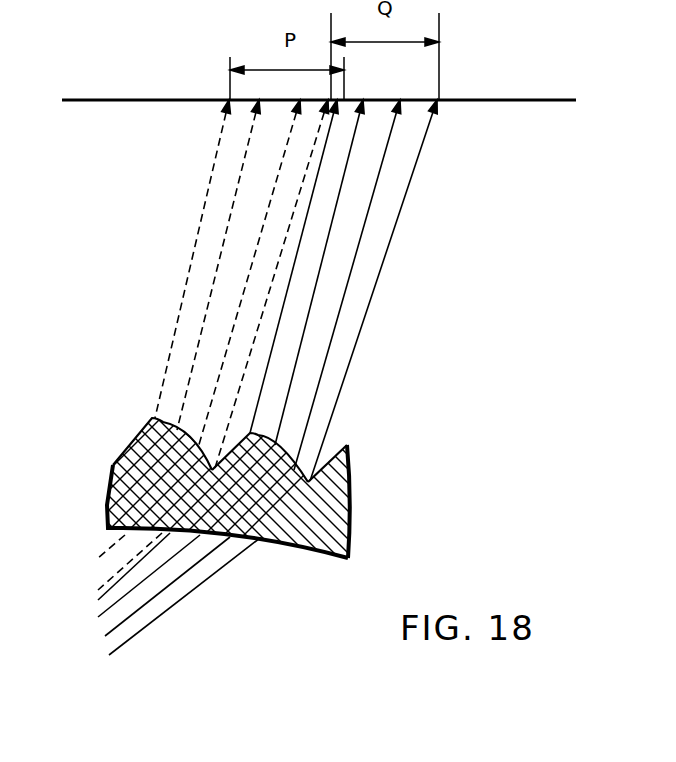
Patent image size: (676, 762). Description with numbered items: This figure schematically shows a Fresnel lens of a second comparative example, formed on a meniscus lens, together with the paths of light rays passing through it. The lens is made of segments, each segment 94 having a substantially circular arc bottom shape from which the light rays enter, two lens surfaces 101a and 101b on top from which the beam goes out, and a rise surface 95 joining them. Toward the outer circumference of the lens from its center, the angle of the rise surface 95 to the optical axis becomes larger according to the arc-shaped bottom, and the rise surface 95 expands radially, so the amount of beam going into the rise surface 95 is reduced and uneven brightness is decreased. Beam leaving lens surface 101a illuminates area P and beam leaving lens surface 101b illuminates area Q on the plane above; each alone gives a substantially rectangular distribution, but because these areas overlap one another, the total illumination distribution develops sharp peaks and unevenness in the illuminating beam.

The lens surface 101a is at (186, 440).
The lens surface 101b is at (274, 447).
The rise surface 95 is at (350, 448).
The segment 94 is at (272, 472).